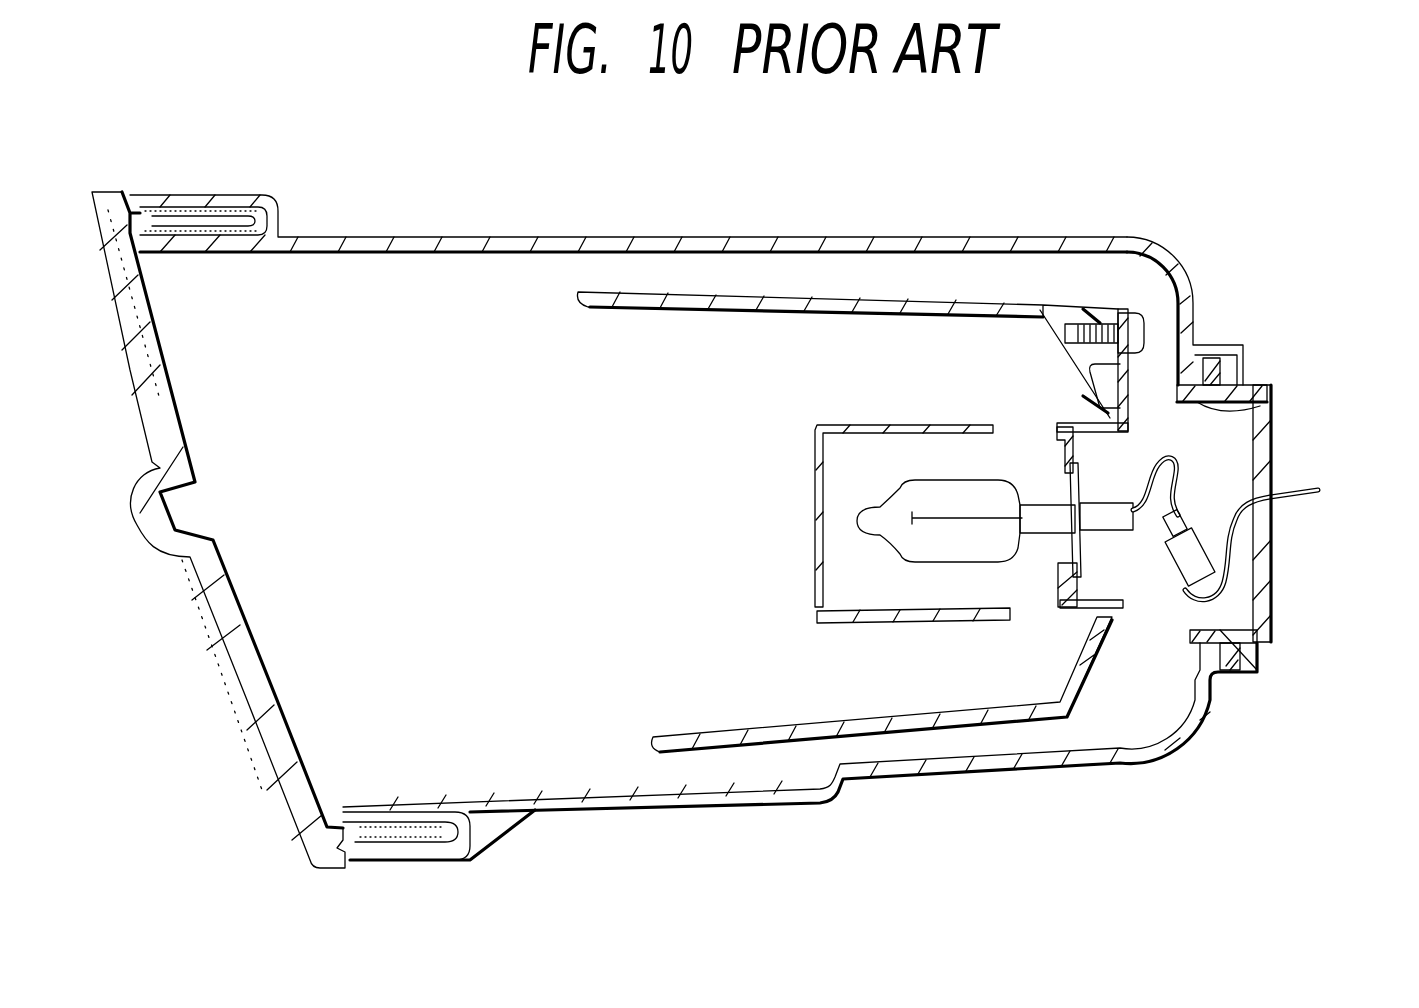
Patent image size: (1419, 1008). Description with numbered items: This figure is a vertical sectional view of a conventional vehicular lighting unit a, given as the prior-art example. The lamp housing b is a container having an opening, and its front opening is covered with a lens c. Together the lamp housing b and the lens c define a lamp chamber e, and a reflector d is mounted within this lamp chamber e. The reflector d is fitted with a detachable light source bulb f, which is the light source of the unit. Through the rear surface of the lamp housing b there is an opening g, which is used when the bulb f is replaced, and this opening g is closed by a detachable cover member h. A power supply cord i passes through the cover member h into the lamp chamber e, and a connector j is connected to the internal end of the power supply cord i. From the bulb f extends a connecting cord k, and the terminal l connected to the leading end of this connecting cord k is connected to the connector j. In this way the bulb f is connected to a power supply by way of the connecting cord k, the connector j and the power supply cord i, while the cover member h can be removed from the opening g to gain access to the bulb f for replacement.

The vehicular lighting unit a is at (797, 202).
The lamp housing b is at (564, 210).
The lens c is at (230, 645).
The reflector d is at (767, 745).
The lamp chamber e is at (533, 725).
The light source bulb f is at (880, 540).
The opening g is at (1250, 403).
The cover member h is at (1272, 592).
The power supply cord i is at (1308, 497).
The connector j is at (1167, 590).
The connecting cord k is at (1150, 455).
The terminal l is at (1180, 515).